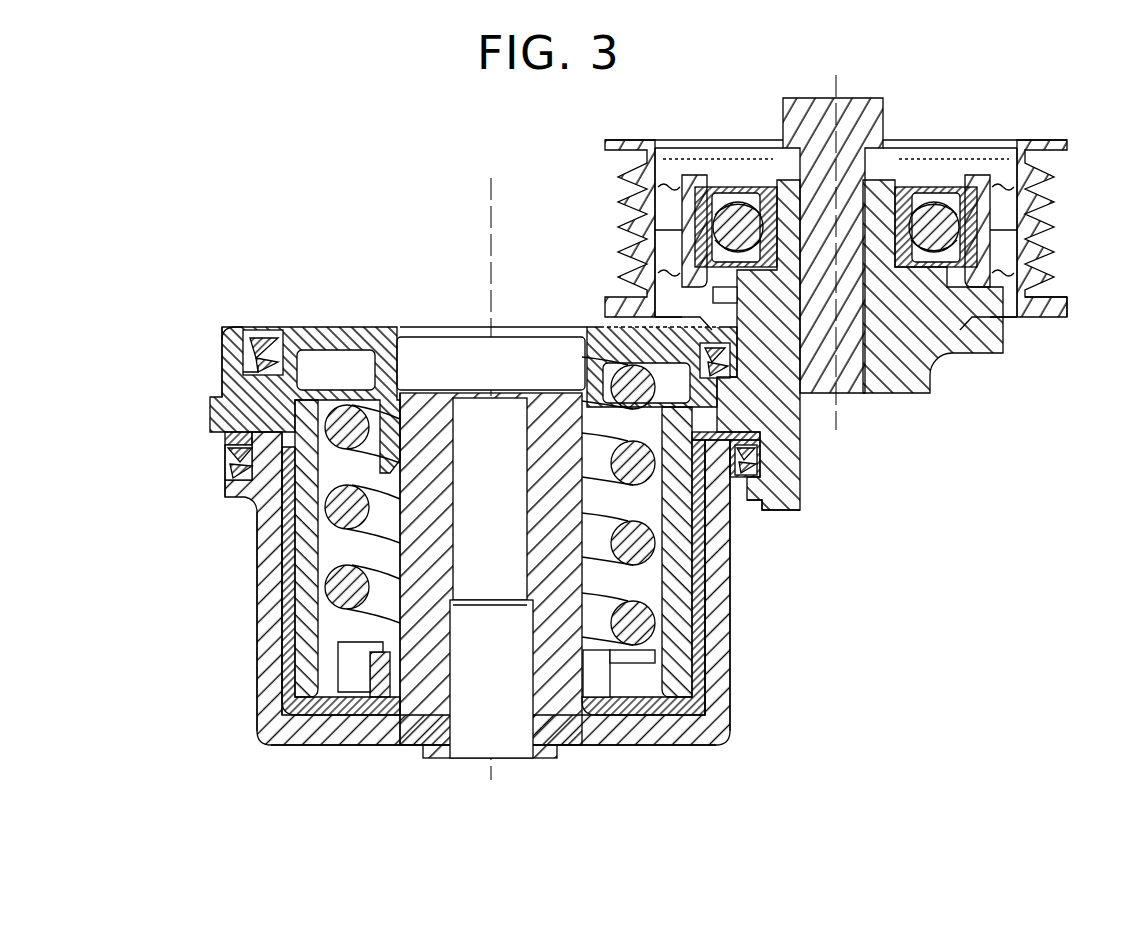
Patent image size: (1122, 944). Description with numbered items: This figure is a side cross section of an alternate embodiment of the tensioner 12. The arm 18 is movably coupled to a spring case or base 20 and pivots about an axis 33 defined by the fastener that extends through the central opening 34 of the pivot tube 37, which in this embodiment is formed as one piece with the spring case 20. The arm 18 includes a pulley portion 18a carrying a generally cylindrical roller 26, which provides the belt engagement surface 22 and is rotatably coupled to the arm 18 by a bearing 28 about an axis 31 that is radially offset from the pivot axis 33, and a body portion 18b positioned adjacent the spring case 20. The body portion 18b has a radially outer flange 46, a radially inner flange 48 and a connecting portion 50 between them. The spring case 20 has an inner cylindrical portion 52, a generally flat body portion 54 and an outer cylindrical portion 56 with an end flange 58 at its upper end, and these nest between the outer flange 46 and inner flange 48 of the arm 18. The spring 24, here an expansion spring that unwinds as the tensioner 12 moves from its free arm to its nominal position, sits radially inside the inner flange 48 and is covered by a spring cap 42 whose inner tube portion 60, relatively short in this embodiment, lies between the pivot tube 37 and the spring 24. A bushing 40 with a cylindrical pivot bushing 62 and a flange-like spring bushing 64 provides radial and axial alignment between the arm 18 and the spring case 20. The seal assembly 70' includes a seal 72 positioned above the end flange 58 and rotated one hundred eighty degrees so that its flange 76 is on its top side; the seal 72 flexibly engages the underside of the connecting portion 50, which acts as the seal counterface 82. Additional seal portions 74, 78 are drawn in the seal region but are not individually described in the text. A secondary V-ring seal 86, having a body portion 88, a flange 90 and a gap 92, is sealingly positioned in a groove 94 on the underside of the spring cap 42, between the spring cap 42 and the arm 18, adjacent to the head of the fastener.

The tensioner 12 is at (424, 230).
The arm 18 is at (953, 106).
The pulley portion 18a is at (1030, 106).
The body portion 18b is at (690, 552).
The spring case 20 is at (712, 722).
The belt engagement surface 22 is at (1040, 262).
The spring 24 is at (348, 404).
The roller 26 is at (1045, 303).
The bearing 28 is at (968, 222).
The axis 31 is at (836, 420).
The axis 33 is at (494, 186).
The central opening 34 is at (505, 748).
The pivot tube 37 is at (430, 650).
The bushing 40 is at (290, 583).
The spring cap 42 is at (347, 330).
The radially outer flange 46 is at (785, 453).
The radially inner flange 48 is at (693, 560).
The connecting portion 50 is at (778, 418).
The inner cylindrical portion 52 is at (567, 718).
The body portion 54 is at (645, 735).
The outer cylindrical portion 56 is at (710, 662).
The end flange 58 is at (758, 508).
The inner tube portion 60 is at (410, 415).
The pivot bushing 62 is at (257, 558).
The spring bushing 64 is at (224, 385).
The seal assembly 70' is at (170, 478).
The seal 72 is at (230, 483).
The seal lip 74 is at (226, 473).
The flange 76 is at (230, 453).
The seal lip 78 is at (229, 455).
The seal counterface 82 is at (223, 424).
The secondary seal 86 is at (258, 348).
The body portion 88 is at (267, 345).
The flange 90 is at (245, 368).
The gap 92 is at (230, 330).
The groove 94 is at (305, 330).